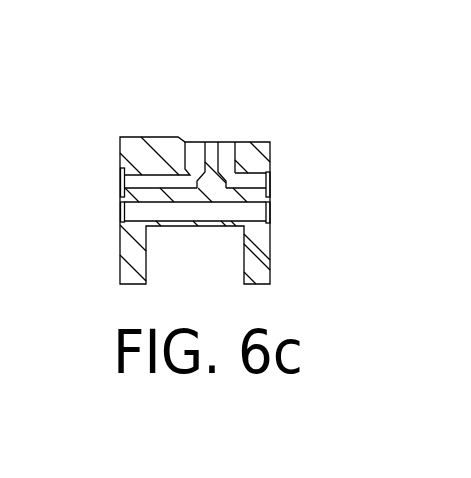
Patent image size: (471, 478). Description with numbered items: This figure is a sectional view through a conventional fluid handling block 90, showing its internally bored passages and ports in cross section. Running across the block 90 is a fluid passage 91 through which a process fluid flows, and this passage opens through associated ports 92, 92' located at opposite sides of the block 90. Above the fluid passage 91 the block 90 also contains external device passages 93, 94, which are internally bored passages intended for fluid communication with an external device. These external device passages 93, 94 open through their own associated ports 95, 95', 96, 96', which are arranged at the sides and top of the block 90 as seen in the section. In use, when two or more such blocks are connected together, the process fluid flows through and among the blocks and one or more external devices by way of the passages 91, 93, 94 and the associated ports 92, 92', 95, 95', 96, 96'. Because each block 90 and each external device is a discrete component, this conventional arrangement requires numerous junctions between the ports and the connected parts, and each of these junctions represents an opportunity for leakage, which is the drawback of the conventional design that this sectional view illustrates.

The block 90 is at (275, 133).
The fluid passage 91 is at (247, 212).
The port 92 is at (298, 238).
The port 92' is at (99, 232).
The external device passage 93 is at (247, 182).
The external device passage 94 is at (142, 138).
The port 95 is at (299, 181).
The port 95' is at (241, 114).
The port 96 is at (195, 140).
The port 96' is at (95, 163).